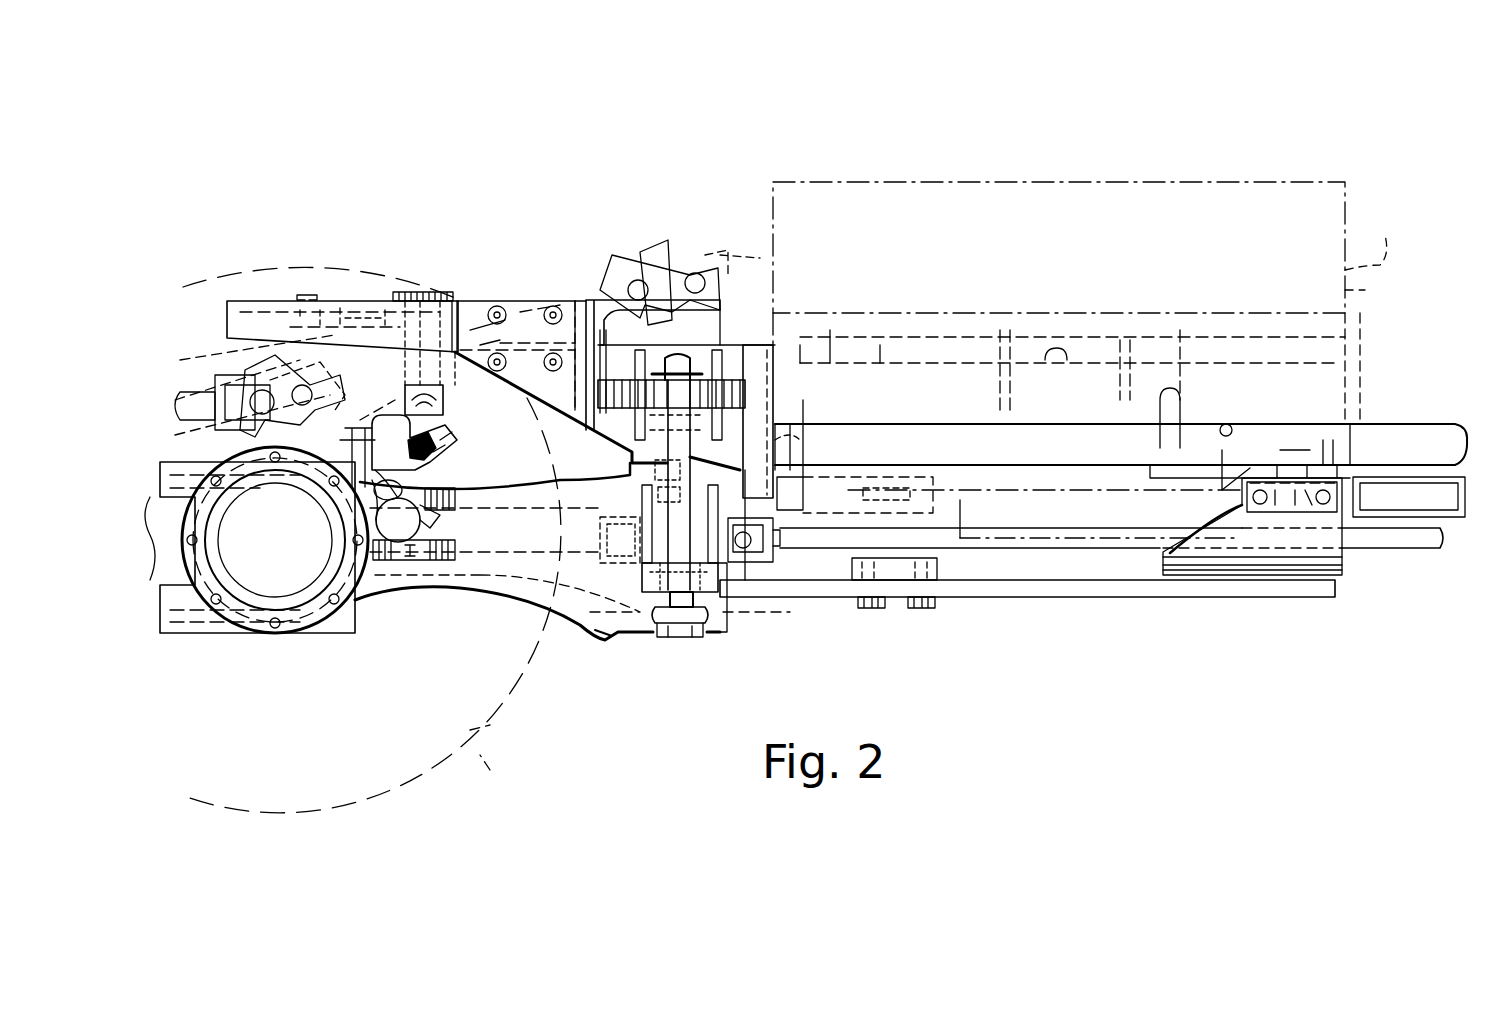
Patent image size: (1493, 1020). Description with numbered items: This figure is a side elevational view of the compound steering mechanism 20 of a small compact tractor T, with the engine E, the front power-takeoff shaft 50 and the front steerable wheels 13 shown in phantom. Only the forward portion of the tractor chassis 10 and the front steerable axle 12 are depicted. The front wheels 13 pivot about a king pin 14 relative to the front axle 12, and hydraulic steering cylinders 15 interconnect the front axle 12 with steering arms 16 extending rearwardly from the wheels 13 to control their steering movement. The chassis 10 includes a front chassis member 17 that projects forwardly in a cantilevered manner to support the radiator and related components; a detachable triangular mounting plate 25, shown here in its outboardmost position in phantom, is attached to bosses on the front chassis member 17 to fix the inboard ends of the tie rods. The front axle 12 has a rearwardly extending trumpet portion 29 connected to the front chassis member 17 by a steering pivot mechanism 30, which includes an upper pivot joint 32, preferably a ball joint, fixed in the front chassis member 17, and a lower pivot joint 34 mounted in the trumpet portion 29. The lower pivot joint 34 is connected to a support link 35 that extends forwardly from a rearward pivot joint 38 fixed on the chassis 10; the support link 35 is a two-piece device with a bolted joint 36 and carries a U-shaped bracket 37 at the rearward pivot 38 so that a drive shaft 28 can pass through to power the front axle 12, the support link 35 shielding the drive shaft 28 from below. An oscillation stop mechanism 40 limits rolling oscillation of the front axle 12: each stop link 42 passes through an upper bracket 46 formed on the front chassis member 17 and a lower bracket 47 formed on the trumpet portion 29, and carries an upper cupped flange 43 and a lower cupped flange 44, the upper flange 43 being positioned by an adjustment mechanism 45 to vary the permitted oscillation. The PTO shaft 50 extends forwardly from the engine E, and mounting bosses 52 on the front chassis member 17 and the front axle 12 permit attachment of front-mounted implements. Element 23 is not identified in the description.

The tractor chassis 10 is at (1375, 425).
The front steerable axle 12 is at (336, 625).
The front steerable wheels 13 is at (490, 778).
The king pin 14 is at (320, 430).
The hydraulic steering cylinders 15 is at (440, 470).
The steering arms 16 is at (388, 428).
The front chassis member 17 is at (255, 310).
The steering mechanism 20 is at (393, 633).
The clamp 23 is at (465, 395).
The triangular mounting plate 25 is at (422, 300).
The drive shaft 28 is at (1405, 543).
The trumpet portion 29 is at (617, 640).
The steering pivot mechanism 30 is at (648, 172).
The upper pivot joint 32 is at (790, 440).
The lower pivot joint 34 is at (775, 605).
The support link 35 is at (1118, 597).
The bolted joint 36 is at (937, 582).
The U-shaped bracket 37 is at (1342, 560).
The rearward pivot joint 38 is at (1297, 497).
The oscillation stop mechanism 40 is at (697, 658).
The stop links 42 is at (640, 460).
The upper cupped flange 43 is at (710, 372).
The lower cupped flange 44 is at (720, 625).
The adjustment mechanism 45 is at (690, 345).
The upper bracket 46 is at (620, 378).
The lower bracket 47 is at (640, 575).
The power-takeoff shaft 50 is at (215, 432).
The mounting bosses 52 is at (158, 548).
The tractor T is at (1190, 120).
The engine E is at (1380, 256).